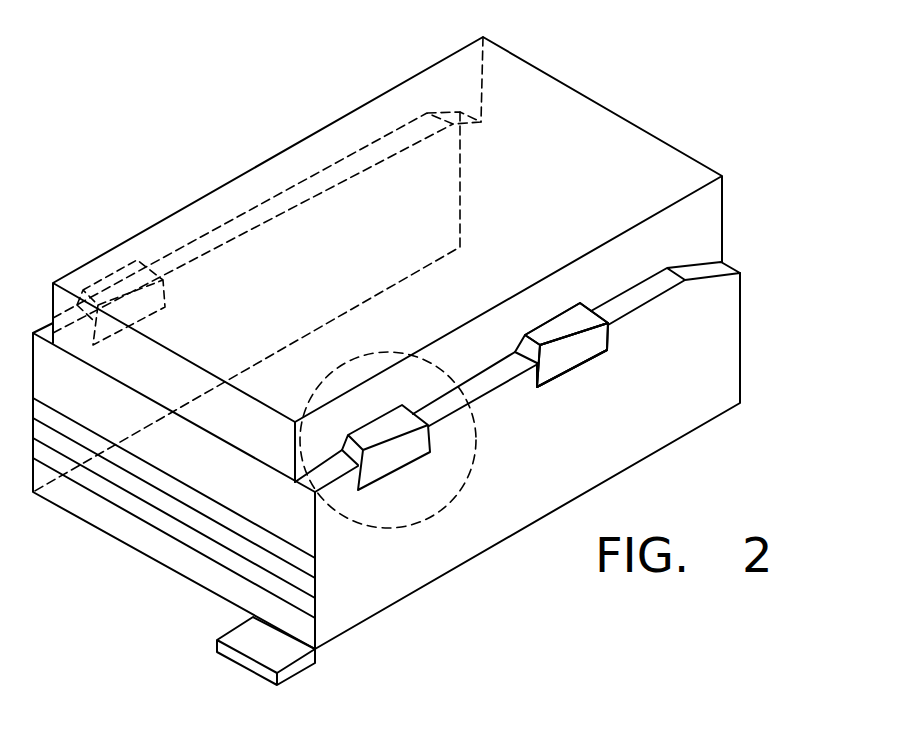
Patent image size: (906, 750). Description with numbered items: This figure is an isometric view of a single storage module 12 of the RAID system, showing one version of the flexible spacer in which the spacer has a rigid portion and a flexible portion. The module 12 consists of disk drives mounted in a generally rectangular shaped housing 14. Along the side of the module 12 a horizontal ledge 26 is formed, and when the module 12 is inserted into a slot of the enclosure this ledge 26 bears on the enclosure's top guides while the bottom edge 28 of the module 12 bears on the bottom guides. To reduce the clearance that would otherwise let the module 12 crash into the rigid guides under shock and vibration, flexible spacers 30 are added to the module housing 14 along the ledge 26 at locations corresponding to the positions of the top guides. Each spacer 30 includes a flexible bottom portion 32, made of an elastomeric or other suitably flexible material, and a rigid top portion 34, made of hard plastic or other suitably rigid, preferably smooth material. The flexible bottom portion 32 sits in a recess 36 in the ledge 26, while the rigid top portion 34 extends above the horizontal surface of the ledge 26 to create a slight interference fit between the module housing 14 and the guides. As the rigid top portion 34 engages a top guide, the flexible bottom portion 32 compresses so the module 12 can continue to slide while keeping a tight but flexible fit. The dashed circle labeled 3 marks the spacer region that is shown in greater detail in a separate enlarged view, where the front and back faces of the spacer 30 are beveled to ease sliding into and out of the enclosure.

The module 12 is at (645, 59).
The housing 14 is at (668, 172).
The horizontal ledge 26 is at (635, 293).
The bottom edge 28 is at (452, 575).
The flexible spacer 30 is at (163, 254).
The flexible bottom portion 32 is at (585, 355).
The rigid top portion 34 is at (565, 322).
The recess 36 is at (565, 378).
The detail region of FIG. 3 is at (386, 352).